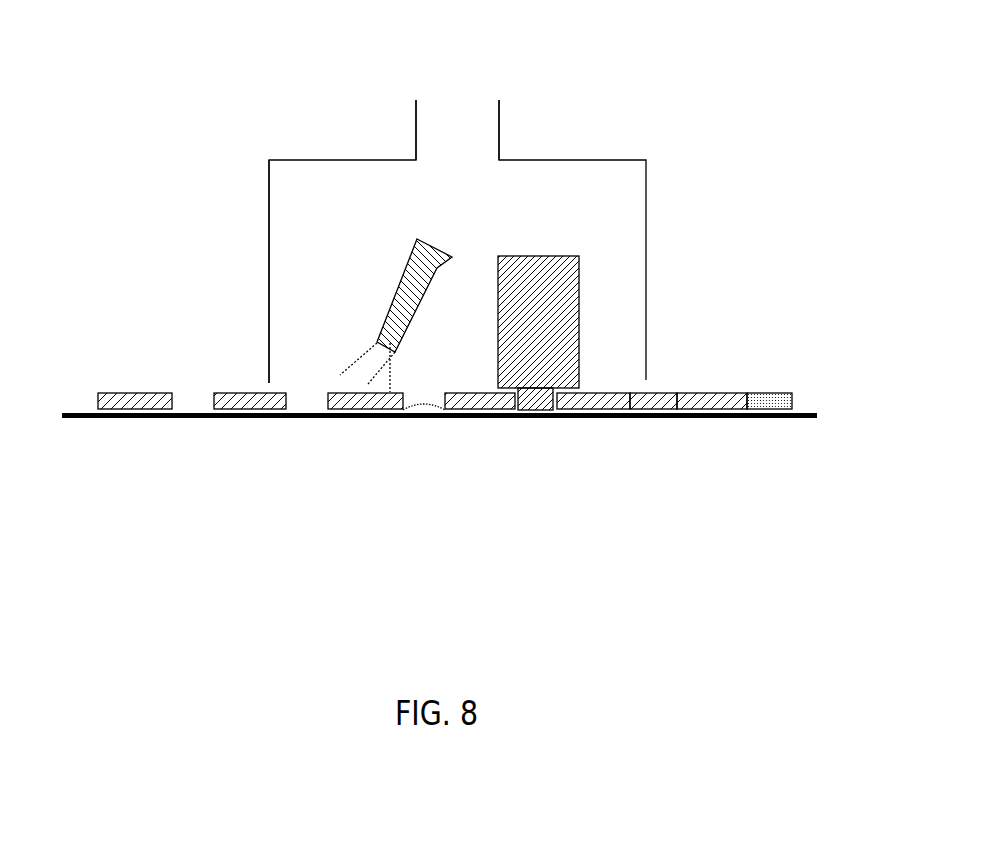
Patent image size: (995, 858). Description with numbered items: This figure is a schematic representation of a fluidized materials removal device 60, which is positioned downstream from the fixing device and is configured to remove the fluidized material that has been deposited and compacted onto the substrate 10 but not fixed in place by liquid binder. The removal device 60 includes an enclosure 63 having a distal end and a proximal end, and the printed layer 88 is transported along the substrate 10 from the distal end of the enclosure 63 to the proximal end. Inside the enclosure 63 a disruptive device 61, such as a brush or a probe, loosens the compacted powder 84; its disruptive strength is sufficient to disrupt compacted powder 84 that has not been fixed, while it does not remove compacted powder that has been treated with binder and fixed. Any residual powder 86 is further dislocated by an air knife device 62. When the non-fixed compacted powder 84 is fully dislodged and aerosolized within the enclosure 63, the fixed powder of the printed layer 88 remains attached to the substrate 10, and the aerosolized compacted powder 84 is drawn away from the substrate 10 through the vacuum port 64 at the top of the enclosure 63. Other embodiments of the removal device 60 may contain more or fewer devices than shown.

The substrate 10 is at (80, 418).
The fluidized materials removal device 60 is at (626, 111).
The disruptive device 61 is at (531, 262).
The air knife device 62 is at (405, 278).
The enclosure 63 is at (269, 160).
The vacuum port 64 is at (462, 115).
The compacted powder 84 is at (770, 395).
The residual powder 86 is at (415, 413).
The printed layer 88 is at (122, 398).